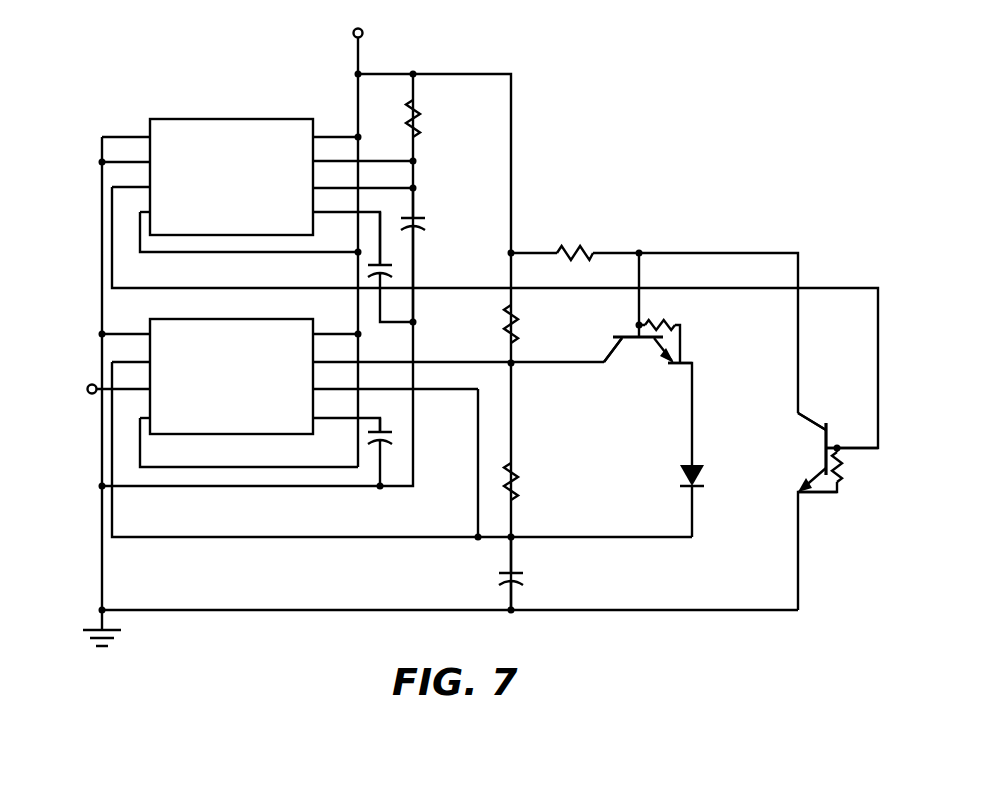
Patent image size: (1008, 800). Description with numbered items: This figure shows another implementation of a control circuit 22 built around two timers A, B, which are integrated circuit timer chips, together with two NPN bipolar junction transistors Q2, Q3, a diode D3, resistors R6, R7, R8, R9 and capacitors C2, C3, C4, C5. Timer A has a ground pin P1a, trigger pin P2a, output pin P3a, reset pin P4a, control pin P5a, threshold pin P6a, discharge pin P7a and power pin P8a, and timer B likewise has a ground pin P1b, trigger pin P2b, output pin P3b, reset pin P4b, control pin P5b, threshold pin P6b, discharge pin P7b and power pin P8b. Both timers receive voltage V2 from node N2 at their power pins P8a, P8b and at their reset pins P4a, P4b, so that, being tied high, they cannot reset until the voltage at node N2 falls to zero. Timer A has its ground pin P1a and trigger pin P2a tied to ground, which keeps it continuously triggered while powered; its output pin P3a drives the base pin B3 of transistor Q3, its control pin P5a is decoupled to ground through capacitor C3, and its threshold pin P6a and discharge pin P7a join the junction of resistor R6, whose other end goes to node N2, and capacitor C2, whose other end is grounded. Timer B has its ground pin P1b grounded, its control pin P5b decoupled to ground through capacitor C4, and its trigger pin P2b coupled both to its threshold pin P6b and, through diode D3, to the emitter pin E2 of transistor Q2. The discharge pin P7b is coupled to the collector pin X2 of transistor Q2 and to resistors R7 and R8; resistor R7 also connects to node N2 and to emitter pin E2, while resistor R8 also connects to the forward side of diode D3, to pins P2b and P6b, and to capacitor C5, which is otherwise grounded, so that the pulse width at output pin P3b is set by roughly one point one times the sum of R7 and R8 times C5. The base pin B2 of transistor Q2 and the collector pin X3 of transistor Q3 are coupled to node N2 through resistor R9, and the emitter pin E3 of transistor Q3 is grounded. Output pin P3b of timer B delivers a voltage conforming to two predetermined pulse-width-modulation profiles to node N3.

The control circuit 22 is at (685, 143).
The timer A is at (198, 118).
The timer B is at (198, 318).
The node N2 is at (356, 22).
The voltage V2 is at (376, 65).
The node N3 is at (77, 389).
The resistor R6 is at (426, 118).
The resistor R7 is at (524, 324).
The resistor R8 is at (524, 481).
The resistor R9 is at (654, 320).
The capacitor C2 is at (427, 255).
The capacitor C3 is at (390, 267).
The capacitor C4 is at (387, 448).
The capacitor C5 is at (524, 573).
The transistor Q2 is at (648, 359).
The transistor Q3 is at (807, 511).
The diode D3 is at (705, 501).
The base pin B2 is at (623, 323).
The emitter pin E2 is at (676, 375).
The collector pin X2 is at (605, 363).
The base pin B3 is at (852, 438).
The emitter pin E3 is at (802, 495).
The collector pin X3 is at (797, 416).
The ground pin P1a is at (126, 128).
The trigger pin P2a is at (126, 153).
The output pin P3a is at (131, 178).
The reset pin P4a is at (134, 203).
The control pin P5a is at (346, 230).
The threshold pin P6a is at (363, 179).
The discharge pin P7a is at (363, 152).
The power pin P8a is at (335, 128).
The ground pin P1b is at (126, 325).
The trigger pin P2b is at (131, 353).
The output pin P3b is at (123, 380).
The reset pin P4b is at (134, 409).
The control pin P5b is at (346, 416).
The threshold pin P6b is at (395, 380).
The discharge pin P7b is at (458, 353).
The power pin P8b is at (335, 325).